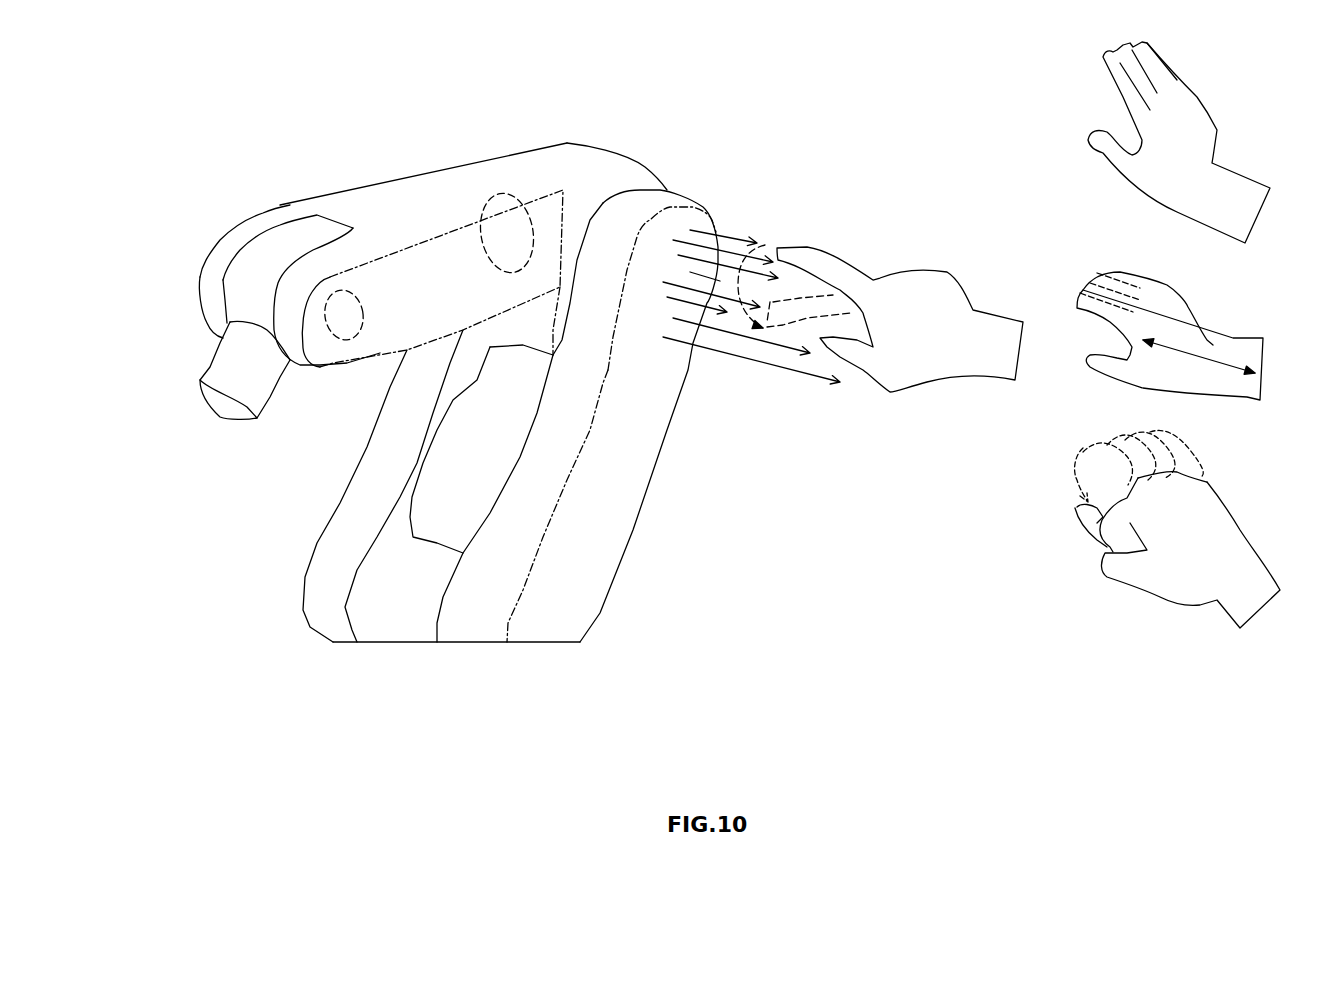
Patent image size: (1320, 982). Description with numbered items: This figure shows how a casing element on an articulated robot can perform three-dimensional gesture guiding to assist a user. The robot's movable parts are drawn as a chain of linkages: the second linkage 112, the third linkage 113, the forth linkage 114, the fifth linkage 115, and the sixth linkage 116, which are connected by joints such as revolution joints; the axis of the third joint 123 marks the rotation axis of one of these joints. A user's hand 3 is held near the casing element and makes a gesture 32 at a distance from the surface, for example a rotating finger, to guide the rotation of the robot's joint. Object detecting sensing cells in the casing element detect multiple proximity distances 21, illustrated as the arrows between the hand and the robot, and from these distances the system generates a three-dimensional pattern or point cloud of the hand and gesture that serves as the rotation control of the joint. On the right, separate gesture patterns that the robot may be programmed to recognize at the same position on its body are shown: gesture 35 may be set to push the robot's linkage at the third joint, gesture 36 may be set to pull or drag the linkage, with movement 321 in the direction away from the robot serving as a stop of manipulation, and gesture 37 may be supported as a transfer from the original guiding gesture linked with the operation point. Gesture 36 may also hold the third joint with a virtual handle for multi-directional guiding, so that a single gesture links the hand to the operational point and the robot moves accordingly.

The hand 3 is at (983, 347).
The proximity distances 21 is at (753, 358).
The gesture 32 is at (765, 240).
The gesture 35 is at (1193, 143).
The gesture 36 is at (1167, 327).
The gesture 37 is at (1197, 543).
The second linkage 112 is at (583, 550).
The third linkage 113 is at (583, 167).
The forth linkage 114 is at (280, 217).
The fifth linkage 115 is at (243, 290).
The sixth linkage 116 is at (200, 370).
The axis of the third joint 123 is at (723, 282).
The movement direction 321 is at (1213, 345).